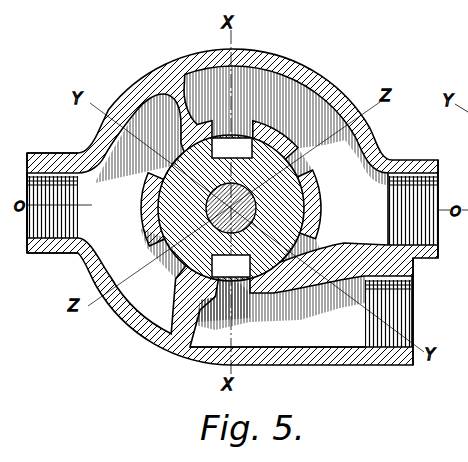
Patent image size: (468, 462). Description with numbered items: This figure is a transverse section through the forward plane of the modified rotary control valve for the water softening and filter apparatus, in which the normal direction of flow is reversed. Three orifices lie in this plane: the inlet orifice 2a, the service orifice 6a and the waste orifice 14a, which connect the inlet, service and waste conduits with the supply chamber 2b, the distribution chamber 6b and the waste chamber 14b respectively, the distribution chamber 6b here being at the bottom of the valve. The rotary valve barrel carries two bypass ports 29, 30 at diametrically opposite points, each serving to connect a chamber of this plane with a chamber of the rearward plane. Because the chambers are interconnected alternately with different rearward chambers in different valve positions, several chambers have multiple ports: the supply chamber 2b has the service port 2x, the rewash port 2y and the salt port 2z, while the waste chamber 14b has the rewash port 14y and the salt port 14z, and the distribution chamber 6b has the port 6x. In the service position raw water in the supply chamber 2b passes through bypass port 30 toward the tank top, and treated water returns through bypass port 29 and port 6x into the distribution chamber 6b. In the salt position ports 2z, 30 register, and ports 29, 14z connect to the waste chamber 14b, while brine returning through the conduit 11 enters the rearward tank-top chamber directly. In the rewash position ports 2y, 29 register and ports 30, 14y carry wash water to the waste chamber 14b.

The waste orifice 14a is at (41, 253).
The waste valve chamber 14b is at (73, 205).
The rewash waste port 14y is at (168, 166).
The salt waste port 14z is at (159, 260).
The inlet orifice 2a is at (438, 176).
The supply chamber 2b is at (388, 212).
The service supply port 2x is at (246, 134).
The rewash supply port 2y is at (312, 253).
The salt supply port 2z is at (305, 166).
The service orifice 6a is at (413, 320).
The distribution chamber 6b is at (277, 311).
The distribution port 6x is at (224, 300).
The bypass port 29 is at (231, 266).
The bypass port 30 is at (232, 148).
The return brine conduit 11 is at (467, 81).